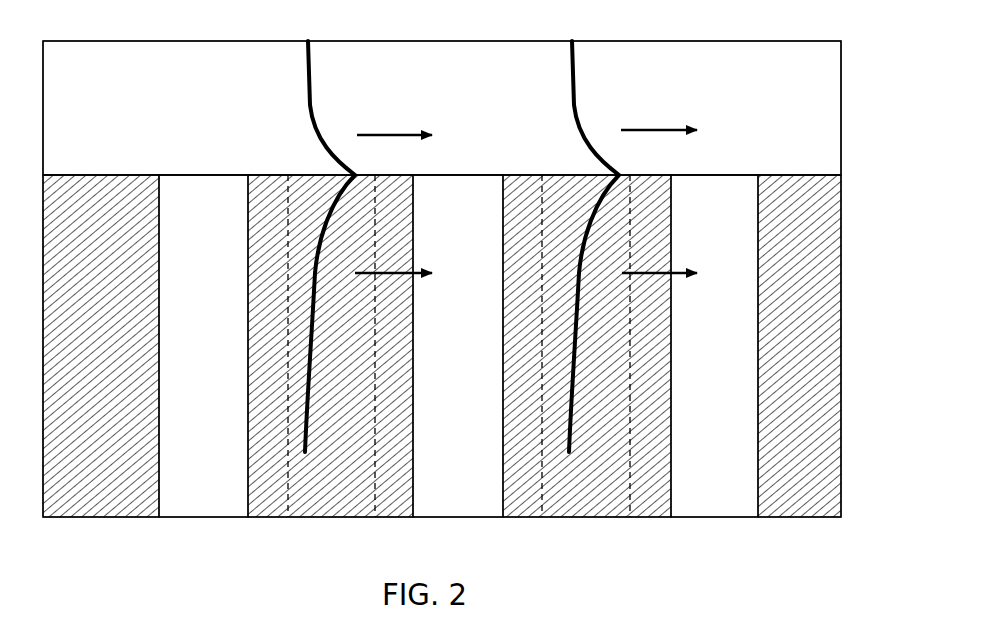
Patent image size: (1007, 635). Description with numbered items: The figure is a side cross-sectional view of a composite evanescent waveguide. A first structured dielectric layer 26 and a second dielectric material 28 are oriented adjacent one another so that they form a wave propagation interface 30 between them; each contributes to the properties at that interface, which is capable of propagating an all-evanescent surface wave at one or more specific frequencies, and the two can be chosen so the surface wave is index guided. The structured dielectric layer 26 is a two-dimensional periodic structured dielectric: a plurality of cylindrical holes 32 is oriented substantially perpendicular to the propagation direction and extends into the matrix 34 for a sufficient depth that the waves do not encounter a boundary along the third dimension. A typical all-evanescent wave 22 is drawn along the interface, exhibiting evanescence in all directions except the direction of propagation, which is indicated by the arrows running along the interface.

The all-evanescent wave 22 is at (567, 102).
The first structured dielectric layer 26 is at (847, 226).
The second dielectric material 28 is at (405, 101).
The wave propagation interface 30 is at (147, 164).
The cylindrical holes 32 is at (189, 357).
The matrix 34 is at (82, 357).